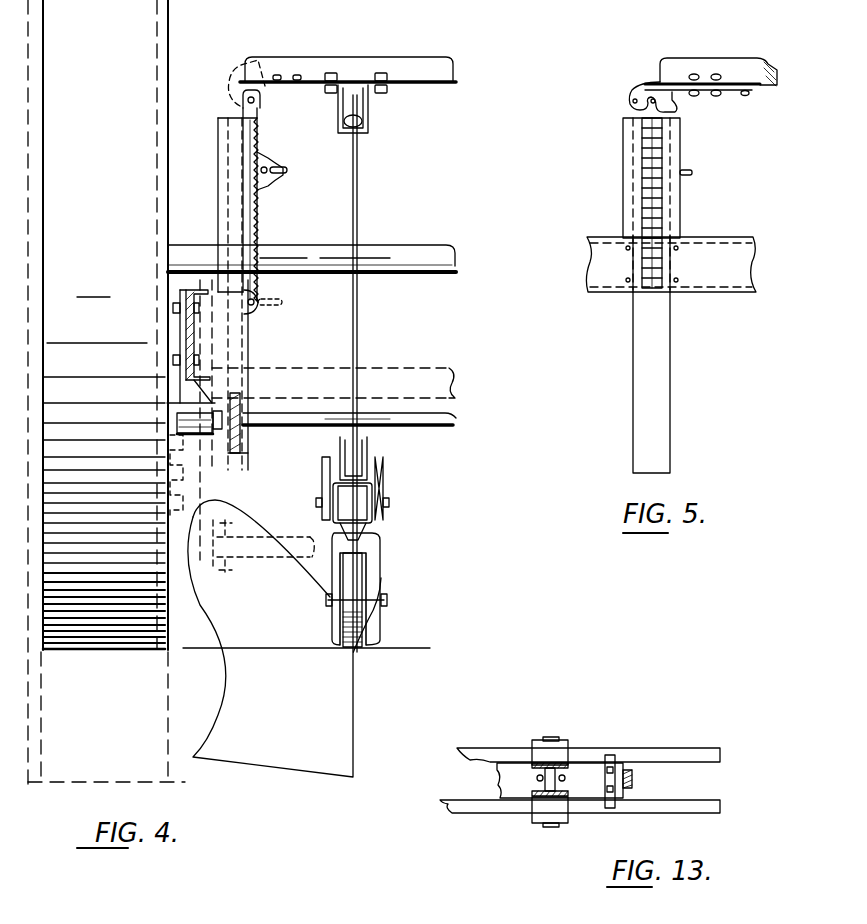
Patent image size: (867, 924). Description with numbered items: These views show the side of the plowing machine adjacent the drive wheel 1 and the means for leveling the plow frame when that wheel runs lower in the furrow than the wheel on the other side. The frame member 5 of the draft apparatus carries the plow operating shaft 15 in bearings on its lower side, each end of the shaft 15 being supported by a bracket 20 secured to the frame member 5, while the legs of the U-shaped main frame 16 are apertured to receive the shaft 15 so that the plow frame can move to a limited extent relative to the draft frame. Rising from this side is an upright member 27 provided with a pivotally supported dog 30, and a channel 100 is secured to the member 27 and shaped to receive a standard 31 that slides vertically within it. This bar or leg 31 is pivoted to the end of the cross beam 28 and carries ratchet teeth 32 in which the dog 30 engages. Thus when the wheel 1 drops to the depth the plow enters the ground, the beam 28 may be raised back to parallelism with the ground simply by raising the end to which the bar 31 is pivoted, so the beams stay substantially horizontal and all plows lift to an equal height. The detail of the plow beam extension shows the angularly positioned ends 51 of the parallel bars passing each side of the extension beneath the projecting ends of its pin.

In FIG. 4, the drive wheel 1 is at (106, 392).
In FIG. 4, the frame member 5 is at (182, 306).
In FIG. 4, the plow operating shaft 15 is at (426, 427).
In FIG. 4, the main frame 16 is at (241, 457).
In FIG. 4, the bracket 20 is at (196, 464).
In FIG. 4, the upright member 27 is at (248, 397).
In FIG. 5, the upright member 27 is at (630, 209).
In FIG. 4, the cross beam 28 is at (412, 68).
In FIG. 5, the cross beam 28 is at (728, 68).
In FIG. 4, the dog 30 is at (267, 161).
In FIG. 4, the standard 31 is at (245, 103).
In FIG. 5, the standard 31 is at (665, 105).
In FIG. 4, the ratchet teeth 32 is at (257, 206).
In FIG. 5, the ratchet teeth 32 is at (656, 208).
In FIG. 4, the channel 100 is at (260, 138).
In FIG. 5, the channel 100 is at (646, 156).
In FIG. 13, the angularly positioned end 51 is at (669, 753).